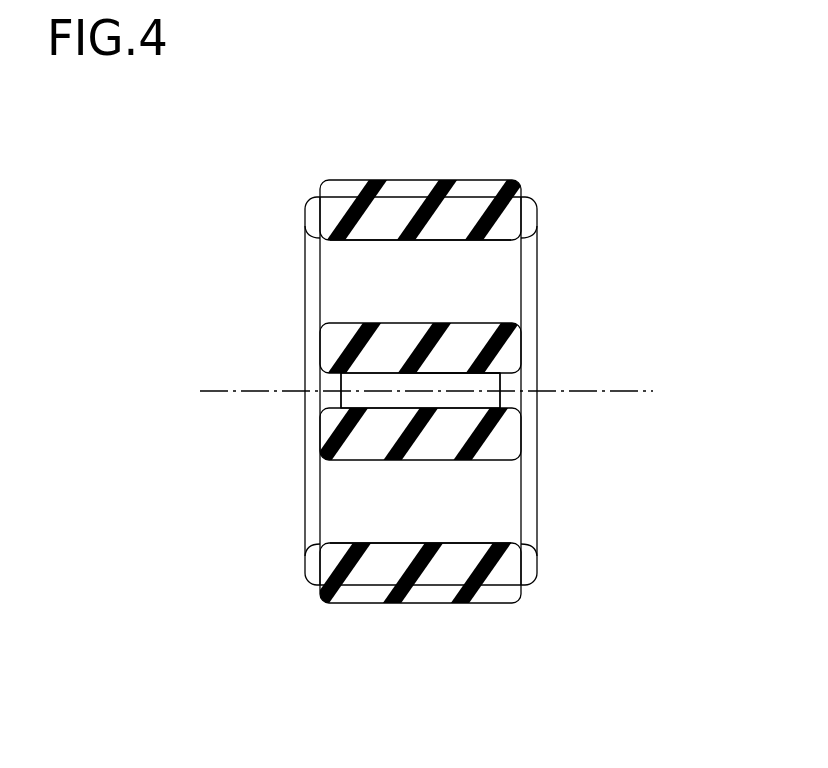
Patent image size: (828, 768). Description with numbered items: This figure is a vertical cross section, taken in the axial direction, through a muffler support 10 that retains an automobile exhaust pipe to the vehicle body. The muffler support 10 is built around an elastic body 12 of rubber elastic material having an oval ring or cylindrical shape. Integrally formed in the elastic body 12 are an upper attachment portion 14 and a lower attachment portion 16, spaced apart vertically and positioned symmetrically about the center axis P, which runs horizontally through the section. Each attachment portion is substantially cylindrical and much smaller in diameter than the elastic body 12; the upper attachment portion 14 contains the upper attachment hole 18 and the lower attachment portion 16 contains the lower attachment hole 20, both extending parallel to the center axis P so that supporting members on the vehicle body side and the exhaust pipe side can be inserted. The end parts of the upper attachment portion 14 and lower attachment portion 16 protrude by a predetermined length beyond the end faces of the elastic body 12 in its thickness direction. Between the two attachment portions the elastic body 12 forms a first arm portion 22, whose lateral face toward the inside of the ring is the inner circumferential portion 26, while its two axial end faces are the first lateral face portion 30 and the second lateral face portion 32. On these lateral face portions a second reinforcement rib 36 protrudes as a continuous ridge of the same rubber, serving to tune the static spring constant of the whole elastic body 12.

The muffler support 10 is at (576, 193).
The elastic body 12 is at (416, 176).
The upper attachment portion 14 is at (360, 178).
The lower attachment portion 16 is at (435, 605).
The upper attachment hole 18 is at (492, 242).
The lower attachment hole 20 is at (480, 542).
The first arm portion 22 is at (436, 388).
The inner circumferential portion 26 is at (470, 380).
The first lateral face portion 30 is at (340, 398).
The second lateral face portion 32 is at (503, 402).
The second reinforcement rib 36 is at (313, 217).
The center axis P is at (617, 390).